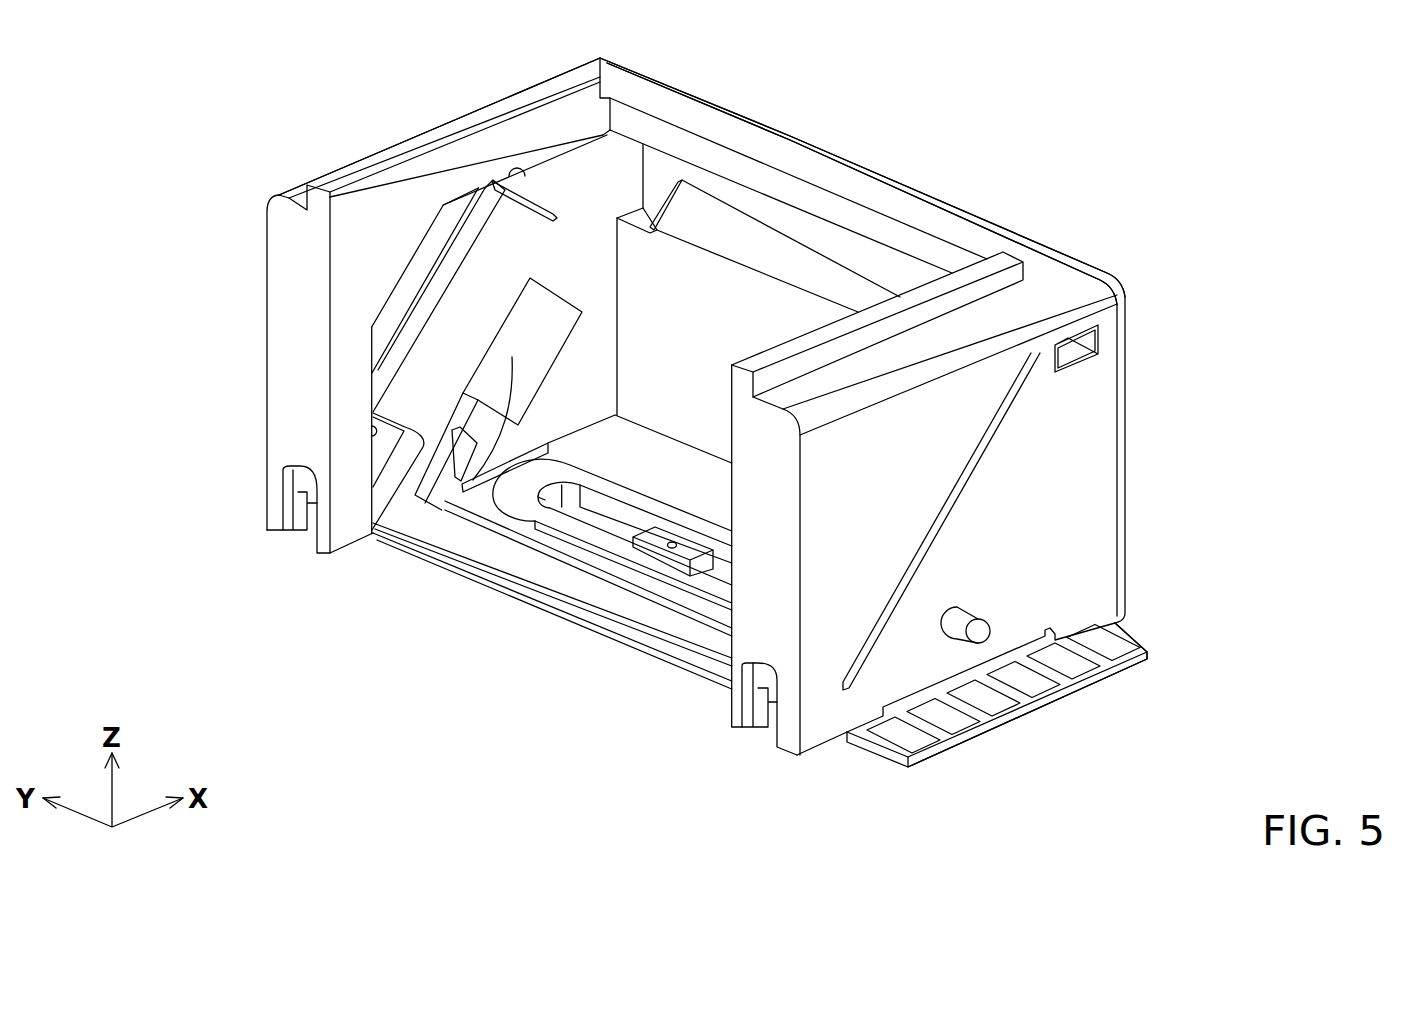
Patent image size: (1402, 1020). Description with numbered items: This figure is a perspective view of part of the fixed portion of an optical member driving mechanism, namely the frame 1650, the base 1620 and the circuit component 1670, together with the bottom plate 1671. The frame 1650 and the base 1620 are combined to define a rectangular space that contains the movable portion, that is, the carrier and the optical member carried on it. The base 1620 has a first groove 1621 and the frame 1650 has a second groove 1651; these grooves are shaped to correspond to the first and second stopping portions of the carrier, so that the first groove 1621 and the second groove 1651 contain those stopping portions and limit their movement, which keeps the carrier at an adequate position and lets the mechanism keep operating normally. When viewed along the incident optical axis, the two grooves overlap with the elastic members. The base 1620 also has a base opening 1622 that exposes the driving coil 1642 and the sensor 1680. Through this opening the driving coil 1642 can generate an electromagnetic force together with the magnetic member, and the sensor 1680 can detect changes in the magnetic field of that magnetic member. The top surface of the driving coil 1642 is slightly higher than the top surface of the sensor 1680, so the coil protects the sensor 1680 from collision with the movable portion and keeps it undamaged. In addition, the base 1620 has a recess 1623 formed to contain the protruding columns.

The base 1620 is at (755, 394).
The first groove 1621 is at (444, 492).
The base opening 1622 is at (527, 527).
The recess 1623 is at (647, 218).
The driving coil 1642 is at (603, 540).
The frame 1650 is at (856, 191).
The second groove 1651 is at (417, 250).
The circuit component 1670 is at (1008, 687).
The bottom plate 1671 is at (1117, 680).
The sensor 1680 is at (690, 553).